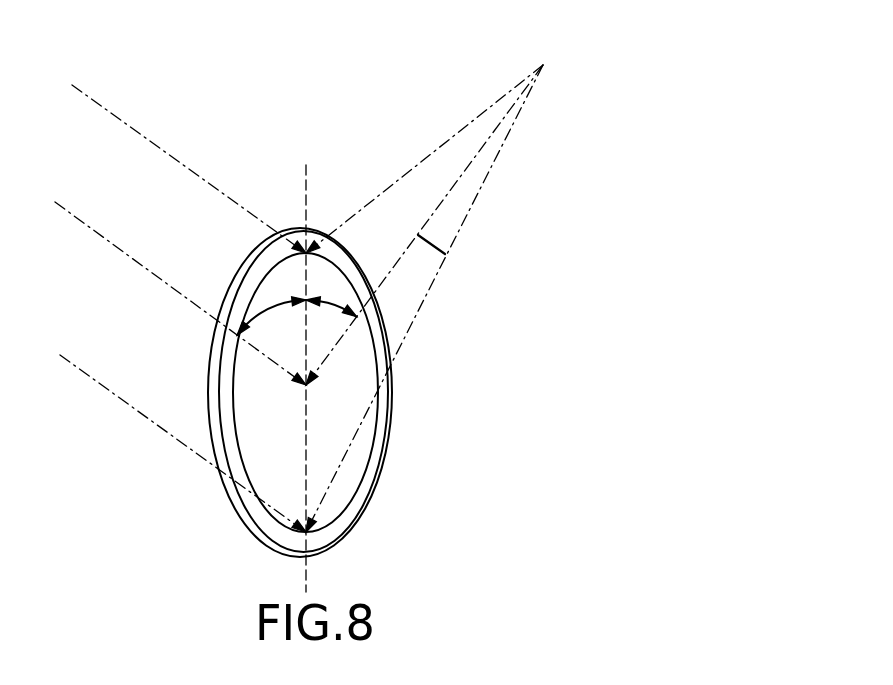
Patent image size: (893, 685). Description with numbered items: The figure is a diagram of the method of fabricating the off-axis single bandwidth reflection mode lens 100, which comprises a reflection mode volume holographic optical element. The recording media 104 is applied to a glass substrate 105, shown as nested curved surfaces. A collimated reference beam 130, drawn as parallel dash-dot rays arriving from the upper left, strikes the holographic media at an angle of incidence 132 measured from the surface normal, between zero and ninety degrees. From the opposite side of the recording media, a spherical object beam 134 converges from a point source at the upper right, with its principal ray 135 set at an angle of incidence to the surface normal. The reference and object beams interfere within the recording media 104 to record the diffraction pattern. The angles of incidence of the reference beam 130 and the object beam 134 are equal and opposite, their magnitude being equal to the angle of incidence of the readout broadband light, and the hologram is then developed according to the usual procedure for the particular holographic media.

The off-axis single bandwidth reflection mode lens 100 is at (424, 76).
The collimated reference beam 130 is at (120, 120).
The angle of incidence θREF 132 is at (268, 311).
The spherical object beam 134 is at (495, 160).
The principal ray 135 is at (445, 254).
The glass substrate 105 is at (387, 453).
The recording media 104 is at (348, 478).